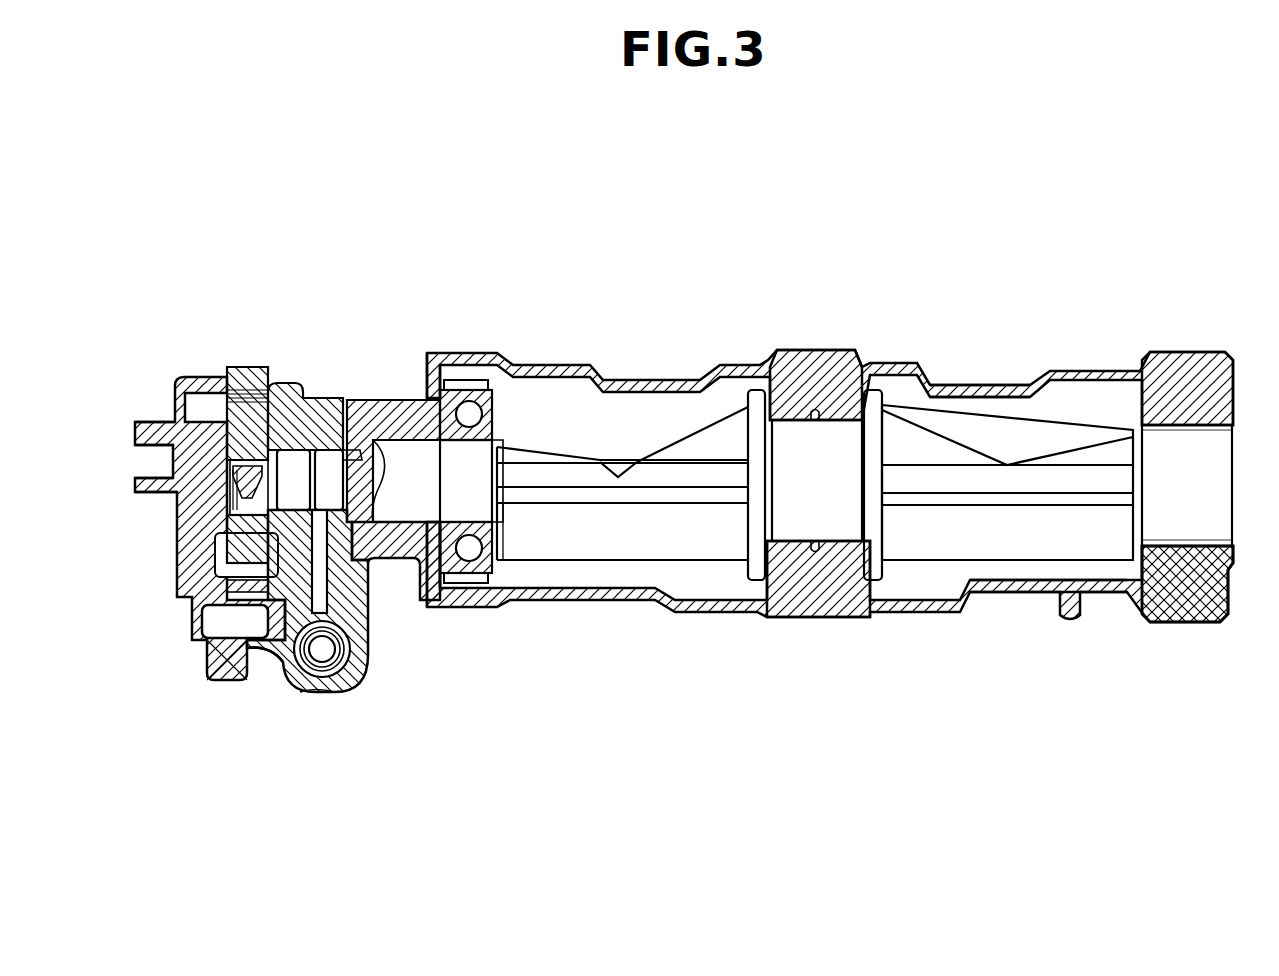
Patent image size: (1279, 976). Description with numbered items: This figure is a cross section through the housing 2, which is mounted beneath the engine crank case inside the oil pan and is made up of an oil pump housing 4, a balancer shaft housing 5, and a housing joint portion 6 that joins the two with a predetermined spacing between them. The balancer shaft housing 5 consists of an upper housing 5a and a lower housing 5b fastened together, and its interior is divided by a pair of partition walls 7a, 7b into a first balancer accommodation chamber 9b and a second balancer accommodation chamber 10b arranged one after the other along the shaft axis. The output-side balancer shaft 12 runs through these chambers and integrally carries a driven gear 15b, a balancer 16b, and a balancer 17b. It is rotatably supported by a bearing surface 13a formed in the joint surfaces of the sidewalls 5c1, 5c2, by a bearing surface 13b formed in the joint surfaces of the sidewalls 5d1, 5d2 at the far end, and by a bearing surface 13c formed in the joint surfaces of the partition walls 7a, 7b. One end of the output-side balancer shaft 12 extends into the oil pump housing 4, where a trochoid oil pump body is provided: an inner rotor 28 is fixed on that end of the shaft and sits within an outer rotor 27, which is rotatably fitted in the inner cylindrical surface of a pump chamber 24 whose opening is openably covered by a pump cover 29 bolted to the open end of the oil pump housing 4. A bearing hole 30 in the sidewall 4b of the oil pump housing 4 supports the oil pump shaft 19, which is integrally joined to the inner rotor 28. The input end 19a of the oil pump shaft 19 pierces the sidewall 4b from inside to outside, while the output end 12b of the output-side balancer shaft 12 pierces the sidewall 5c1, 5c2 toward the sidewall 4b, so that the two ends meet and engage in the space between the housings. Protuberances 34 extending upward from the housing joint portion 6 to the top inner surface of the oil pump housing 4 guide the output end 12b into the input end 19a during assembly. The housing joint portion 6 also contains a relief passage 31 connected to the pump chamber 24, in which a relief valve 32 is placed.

The housing 2 is at (740, 243).
The oil pump housing 4 is at (262, 372).
The sidewall 4b is at (280, 470).
The balancer shaft housing 5 is at (773, 325).
The upper housing 5a is at (973, 385).
The lower housing 5b is at (952, 610).
The sidewall 5c1 is at (395, 430).
The sidewall 5c2 is at (430, 600).
The sidewall 5d1 is at (1185, 375).
The sidewall 5d2 is at (1183, 595).
The housing joint portion 6 is at (352, 672).
The partition wall 7a is at (830, 355).
The partition wall 7b is at (812, 580).
The first balancer accommodation chamber 9b is at (712, 578).
The second balancer accommodation chamber 10b is at (1005, 580).
The output-side balancer shaft 12 is at (400, 455).
The output end 12b is at (375, 478).
The bearing surface 13a is at (392, 560).
The bearing surface 13b is at (1200, 543).
The bearing surface 13c is at (790, 550).
The driven gear 15b is at (492, 378).
The balancer 16b is at (615, 520).
The balancer 17b is at (940, 530).
The oil pump shaft 19 is at (305, 470).
The input end 19a is at (343, 468).
The pump chamber 24 is at (243, 570).
The outer rotor 27 is at (245, 368).
The inner rotor 28 is at (232, 418).
The pump cover 29 is at (160, 440).
The bearing hole 30 is at (272, 642).
The relief passage 31 is at (320, 692).
The relief valve 32 is at (360, 655).
The protuberance 34 is at (318, 470).